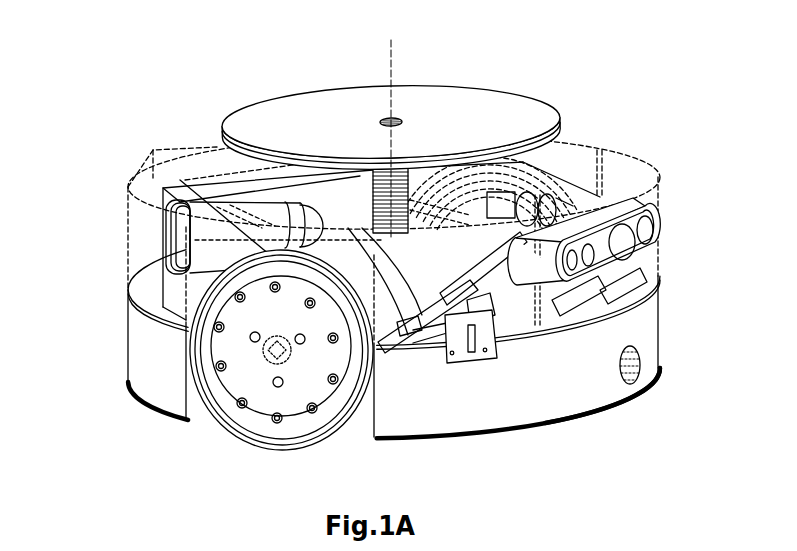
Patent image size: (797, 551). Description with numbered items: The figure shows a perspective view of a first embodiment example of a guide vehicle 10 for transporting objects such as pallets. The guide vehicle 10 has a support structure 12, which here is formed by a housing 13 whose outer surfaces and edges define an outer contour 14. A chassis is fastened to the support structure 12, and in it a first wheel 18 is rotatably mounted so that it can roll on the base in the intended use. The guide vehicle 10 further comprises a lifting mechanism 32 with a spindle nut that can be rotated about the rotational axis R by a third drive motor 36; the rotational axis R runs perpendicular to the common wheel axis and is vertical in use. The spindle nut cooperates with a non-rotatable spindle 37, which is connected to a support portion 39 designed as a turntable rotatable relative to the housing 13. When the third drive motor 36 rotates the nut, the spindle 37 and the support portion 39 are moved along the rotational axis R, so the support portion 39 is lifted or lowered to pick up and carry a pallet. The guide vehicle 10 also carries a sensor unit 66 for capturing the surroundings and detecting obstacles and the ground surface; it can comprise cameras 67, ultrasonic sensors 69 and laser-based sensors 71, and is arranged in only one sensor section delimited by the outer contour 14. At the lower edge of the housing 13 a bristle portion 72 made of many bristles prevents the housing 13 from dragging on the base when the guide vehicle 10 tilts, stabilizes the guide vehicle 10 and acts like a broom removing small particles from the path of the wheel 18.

The guide vehicle 10 is at (117, 73).
The support structure 12 is at (342, 336).
The housing 13 is at (128, 343).
The outer contour 14 is at (128, 257).
The first wheel 18 is at (263, 413).
The lifting mechanism 32 is at (208, 108).
The third drive motor 36 is at (160, 163).
The spindle 37 is at (207, 195).
The support portion 39 is at (498, 108).
The sensor unit 66 is at (601, 344).
The cameras 67 is at (660, 230).
The ultrasonic sensors 69 is at (643, 365).
The laser-based sensors 71 is at (472, 365).
The bristle portion 72 is at (645, 402).
The rotational axis R is at (398, 68).